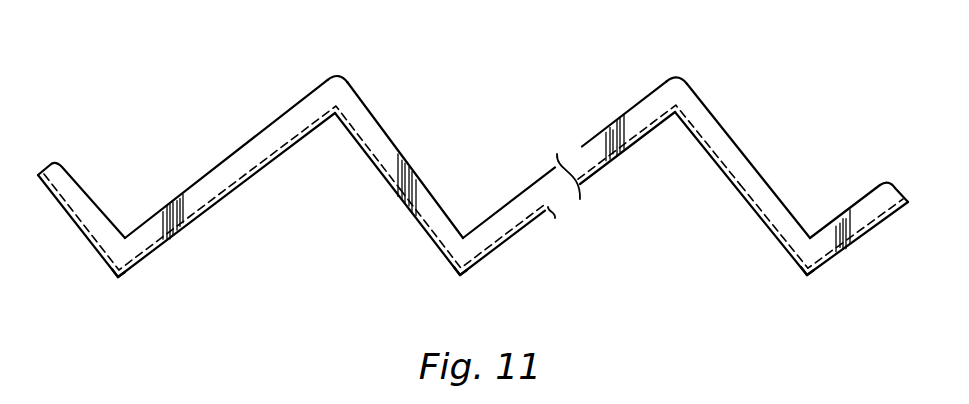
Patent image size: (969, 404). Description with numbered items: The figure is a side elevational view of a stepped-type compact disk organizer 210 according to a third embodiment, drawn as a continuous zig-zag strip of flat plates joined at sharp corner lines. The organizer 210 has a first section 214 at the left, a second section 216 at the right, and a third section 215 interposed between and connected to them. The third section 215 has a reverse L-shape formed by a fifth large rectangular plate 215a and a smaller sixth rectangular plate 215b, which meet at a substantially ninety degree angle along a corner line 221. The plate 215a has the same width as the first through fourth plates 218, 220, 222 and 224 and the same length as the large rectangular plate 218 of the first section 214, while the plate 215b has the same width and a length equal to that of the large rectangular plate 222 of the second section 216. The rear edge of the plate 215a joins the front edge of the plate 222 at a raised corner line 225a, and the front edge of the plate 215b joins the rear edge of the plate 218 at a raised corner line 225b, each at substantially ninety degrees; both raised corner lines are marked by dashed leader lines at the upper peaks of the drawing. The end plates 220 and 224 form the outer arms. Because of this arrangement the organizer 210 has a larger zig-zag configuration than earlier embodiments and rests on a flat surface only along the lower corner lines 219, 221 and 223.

The compact disk organizer 210 is at (286, 262).
The first section 214 is at (156, 168).
The third section 215 is at (483, 169).
The fifth large rectangular plate 215a is at (548, 210).
The sixth rectangular plate 215b is at (398, 201).
The second section 216 is at (817, 161).
The large rectangular plate 218 is at (219, 207).
The corner line 219 is at (118, 278).
The rectangular plate 220 is at (80, 231).
The corner line 221 is at (460, 276).
The large rectangular plate 222 is at (763, 224).
The corner line 223 is at (807, 277).
The rectangular plate 224 is at (866, 233).
The raised corner line 225a is at (675, 112).
The raised corner line 225b is at (335, 112).